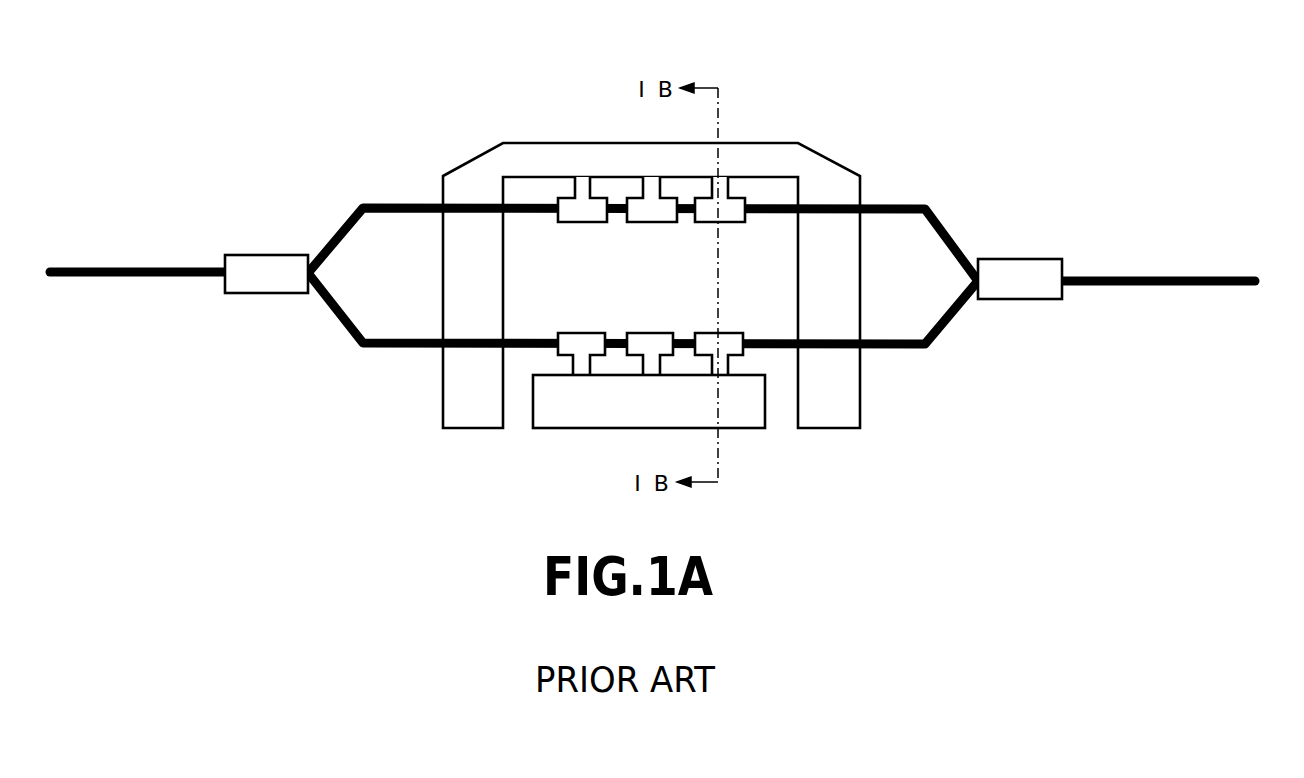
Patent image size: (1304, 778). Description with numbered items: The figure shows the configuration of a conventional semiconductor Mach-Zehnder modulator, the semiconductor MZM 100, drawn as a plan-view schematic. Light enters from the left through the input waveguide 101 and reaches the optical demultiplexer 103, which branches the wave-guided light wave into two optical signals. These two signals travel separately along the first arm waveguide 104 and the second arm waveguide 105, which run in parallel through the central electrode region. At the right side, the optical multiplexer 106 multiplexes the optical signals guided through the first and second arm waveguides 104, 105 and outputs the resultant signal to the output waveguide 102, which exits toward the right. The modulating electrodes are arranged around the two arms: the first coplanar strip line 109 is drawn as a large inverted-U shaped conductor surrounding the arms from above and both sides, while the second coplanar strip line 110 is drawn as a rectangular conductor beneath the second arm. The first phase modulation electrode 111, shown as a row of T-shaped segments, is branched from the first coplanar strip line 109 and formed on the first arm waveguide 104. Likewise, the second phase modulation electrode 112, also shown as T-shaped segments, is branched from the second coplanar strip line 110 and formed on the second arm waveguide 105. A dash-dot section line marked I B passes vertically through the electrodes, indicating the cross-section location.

The semiconductor MZM 100 is at (1100, 93).
The input waveguide 101 is at (140, 267).
The output waveguide 102 is at (1168, 277).
The optical demultiplexer 103 is at (265, 266).
The first arm waveguide 104 is at (405, 204).
The second arm waveguide 105 is at (400, 347).
The optical multiplexer 106 is at (1022, 272).
The first coplanar strip line 109 is at (565, 153).
The second coplanar strip line 110 is at (562, 408).
The first phase modulation electrode 111 is at (652, 213).
The second phase modulation electrode 112 is at (650, 336).